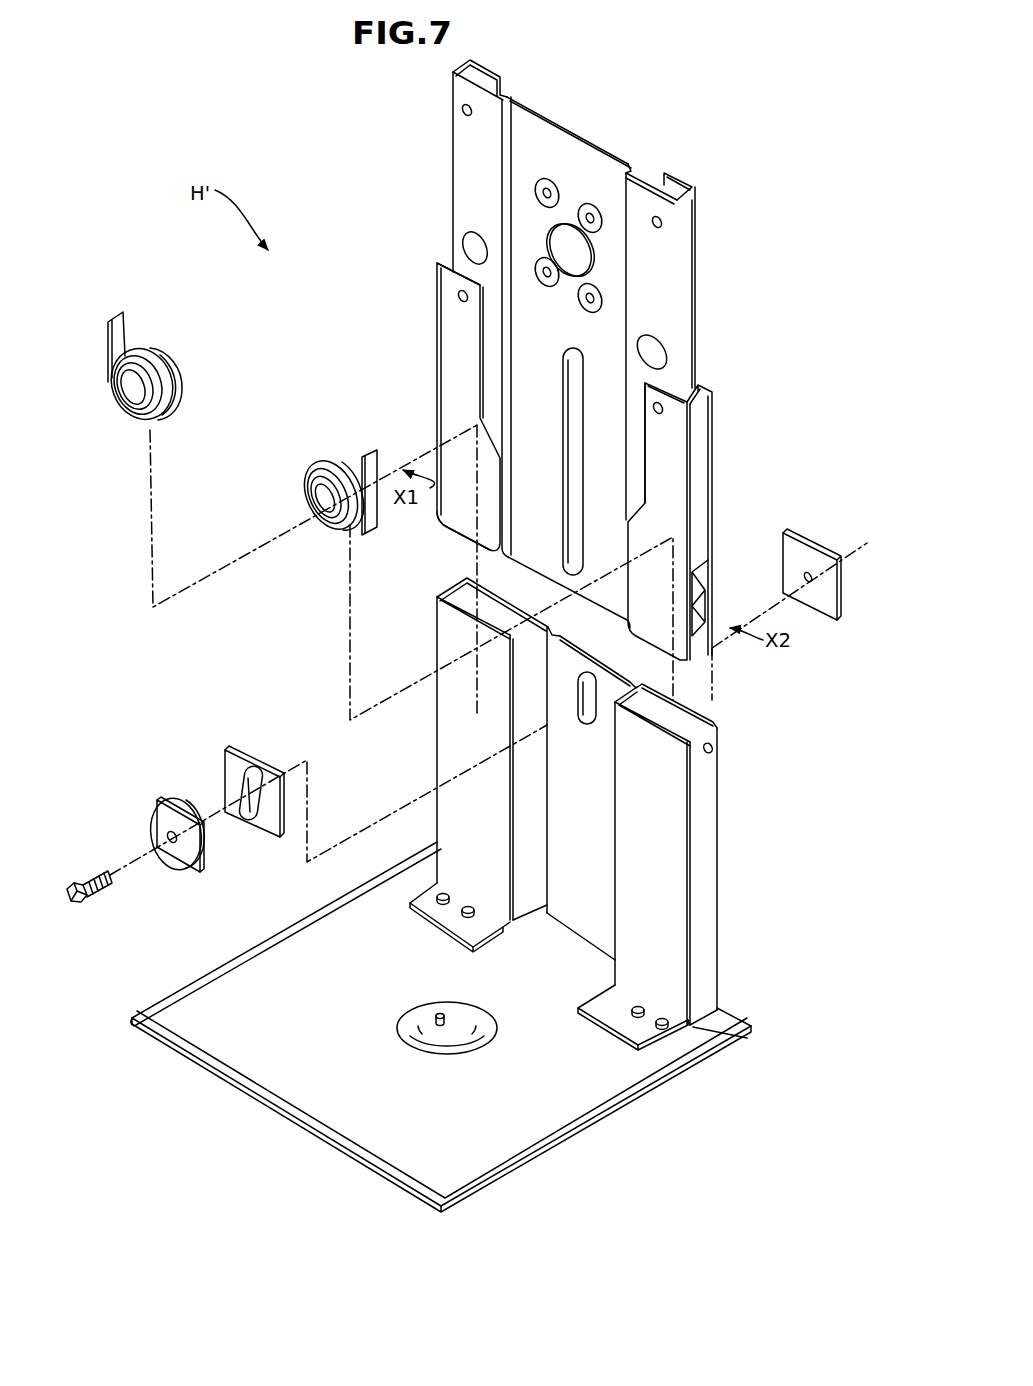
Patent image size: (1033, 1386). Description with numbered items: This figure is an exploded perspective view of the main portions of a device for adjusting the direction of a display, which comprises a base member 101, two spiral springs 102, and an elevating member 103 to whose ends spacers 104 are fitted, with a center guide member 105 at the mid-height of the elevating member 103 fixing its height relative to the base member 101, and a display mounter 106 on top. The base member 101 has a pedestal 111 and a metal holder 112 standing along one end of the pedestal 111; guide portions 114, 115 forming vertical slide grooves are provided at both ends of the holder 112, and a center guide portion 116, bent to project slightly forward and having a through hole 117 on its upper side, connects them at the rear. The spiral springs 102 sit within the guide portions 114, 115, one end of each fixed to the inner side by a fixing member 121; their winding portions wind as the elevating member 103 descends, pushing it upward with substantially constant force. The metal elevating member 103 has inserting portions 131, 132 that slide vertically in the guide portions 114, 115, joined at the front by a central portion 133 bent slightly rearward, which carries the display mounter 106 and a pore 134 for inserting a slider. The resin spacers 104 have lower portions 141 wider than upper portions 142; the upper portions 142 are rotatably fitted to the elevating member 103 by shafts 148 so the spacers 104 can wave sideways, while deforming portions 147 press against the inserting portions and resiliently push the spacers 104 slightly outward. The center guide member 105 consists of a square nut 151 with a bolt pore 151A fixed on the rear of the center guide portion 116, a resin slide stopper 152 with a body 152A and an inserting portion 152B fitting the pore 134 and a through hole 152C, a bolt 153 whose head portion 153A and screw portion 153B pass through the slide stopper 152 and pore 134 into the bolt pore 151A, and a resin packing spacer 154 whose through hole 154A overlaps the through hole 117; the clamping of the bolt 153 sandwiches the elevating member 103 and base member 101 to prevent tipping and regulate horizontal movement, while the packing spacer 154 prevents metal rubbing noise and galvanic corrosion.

The base member 101 is at (563, 814).
The spiral spring 102 is at (108, 352).
The elevating member 103 is at (567, 335).
The spacer 104 is at (565, 479).
The center guide member 105 is at (164, 816).
The display mounter 106 is at (545, 228).
The pedestal 111 is at (560, 1092).
The holder 112 is at (671, 798).
The guide portion 114 is at (442, 774).
The guide portion 115 is at (743, 876).
The center guide portion 116 is at (595, 822).
The through hole 117 is at (585, 728).
The fixing member 121 is at (712, 750).
The inserting portion 131 is at (468, 218).
The inserting portion 132 is at (668, 278).
The central portion 133 is at (563, 362).
The pore for inserting a slider 134 is at (590, 468).
The lower portion 141 is at (450, 513).
The upper portion 142 is at (455, 328).
The deforming portion 147 is at (700, 590).
The shaft 148 is at (460, 296).
The square nut 151 is at (827, 525).
The bolt pore 151A is at (812, 578).
The slide stopper 152 is at (162, 816).
The body 152A is at (160, 825).
The inserting portion 152B is at (190, 805).
The through hole for a bolt 152C is at (176, 842).
The bolt 153 is at (96, 885).
The head portion 153A is at (72, 903).
The screw portion 153B is at (102, 885).
The packing spacer 154 is at (234, 744).
The through hole for a bolt 154A is at (245, 753).